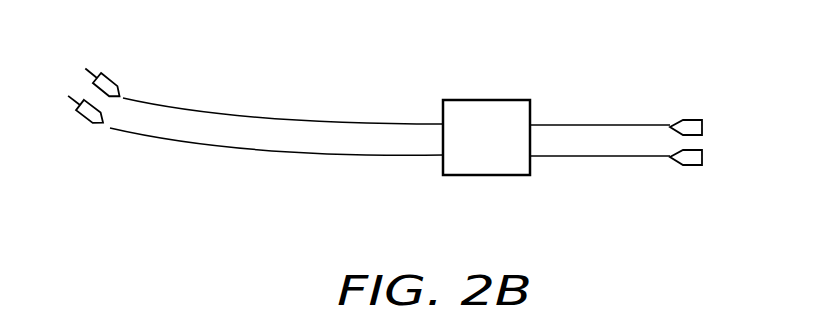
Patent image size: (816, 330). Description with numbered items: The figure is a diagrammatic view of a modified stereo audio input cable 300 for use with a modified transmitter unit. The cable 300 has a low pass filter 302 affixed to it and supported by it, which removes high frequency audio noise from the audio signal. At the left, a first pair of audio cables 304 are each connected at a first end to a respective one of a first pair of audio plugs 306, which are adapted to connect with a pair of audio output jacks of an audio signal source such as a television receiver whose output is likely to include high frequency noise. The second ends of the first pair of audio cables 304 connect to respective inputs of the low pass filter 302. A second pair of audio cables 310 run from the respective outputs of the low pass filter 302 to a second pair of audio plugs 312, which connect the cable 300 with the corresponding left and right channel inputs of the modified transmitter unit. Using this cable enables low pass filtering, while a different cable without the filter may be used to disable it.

The modified stereo audio input cable 300 is at (373, 67).
The low pass filter 302 is at (482, 99).
The first pair of audio cables 304 is at (350, 160).
The first pair of audio plugs 306 is at (118, 76).
The second pair of audio cables 310 is at (606, 158).
The second pair of audio plugs 312 is at (684, 113).